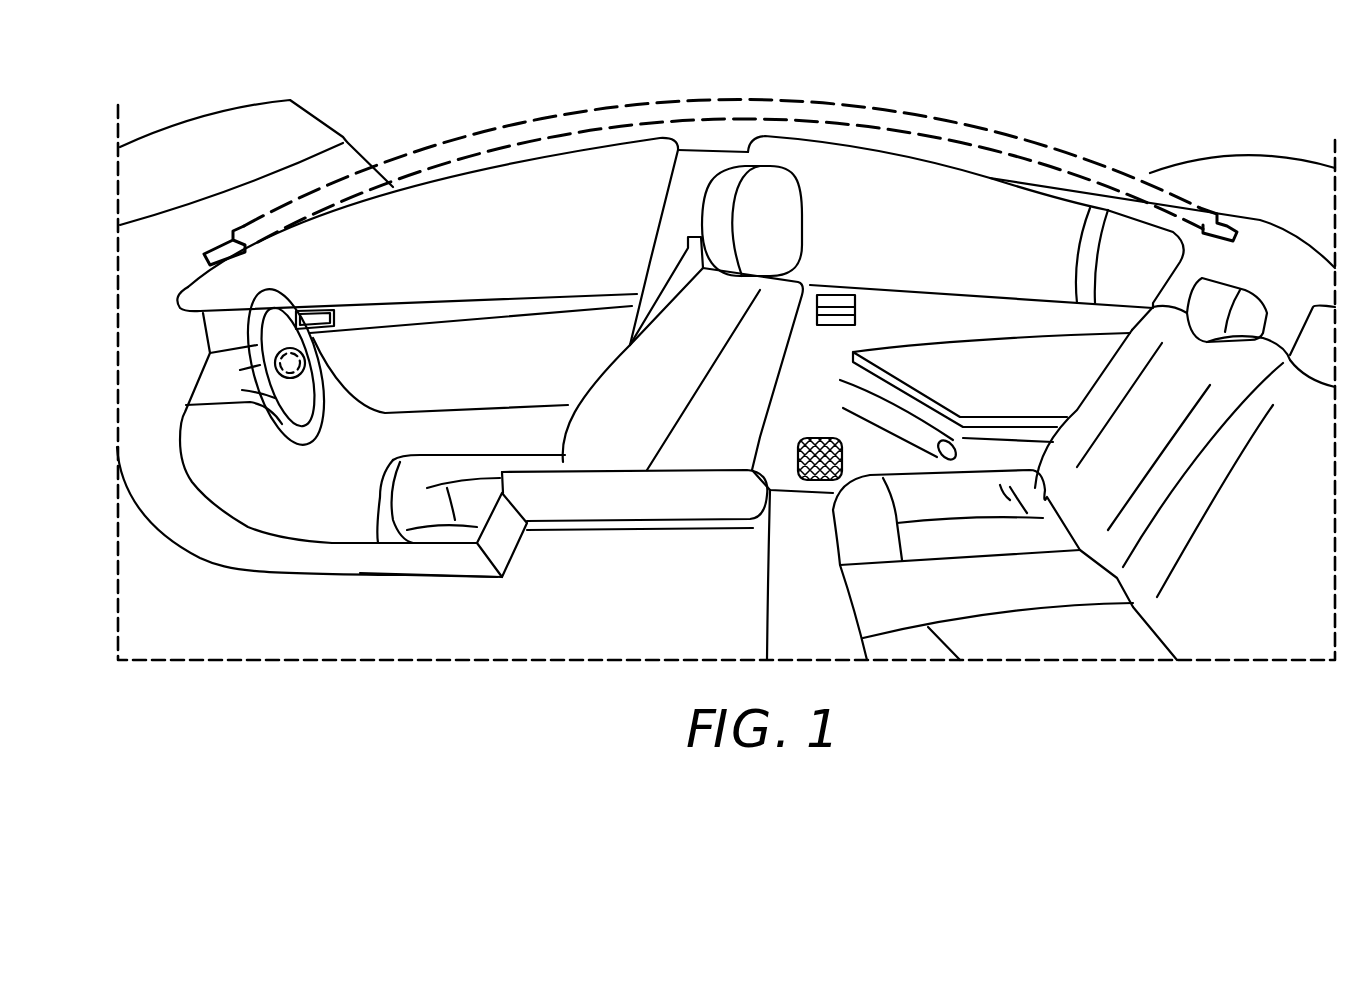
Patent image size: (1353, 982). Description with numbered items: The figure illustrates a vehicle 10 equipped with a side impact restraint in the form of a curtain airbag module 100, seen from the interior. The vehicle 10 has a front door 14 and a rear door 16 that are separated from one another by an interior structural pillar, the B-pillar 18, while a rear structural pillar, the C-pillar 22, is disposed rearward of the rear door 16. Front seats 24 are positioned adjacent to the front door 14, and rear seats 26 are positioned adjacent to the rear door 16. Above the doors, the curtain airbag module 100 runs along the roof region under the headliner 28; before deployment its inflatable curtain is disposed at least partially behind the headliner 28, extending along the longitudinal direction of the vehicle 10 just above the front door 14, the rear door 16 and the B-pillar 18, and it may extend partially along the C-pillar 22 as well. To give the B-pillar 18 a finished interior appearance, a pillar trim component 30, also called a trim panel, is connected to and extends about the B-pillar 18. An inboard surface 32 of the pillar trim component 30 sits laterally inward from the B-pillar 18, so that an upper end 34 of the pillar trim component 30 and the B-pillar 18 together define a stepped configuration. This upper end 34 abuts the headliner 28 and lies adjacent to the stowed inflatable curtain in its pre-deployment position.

The vehicle 10 is at (222, 84).
The front door 14 is at (445, 300).
The rear door 16 is at (1004, 298).
The B-pillar 18 is at (667, 197).
The C-pillar 22 is at (200, 187).
The front seats 24 is at (597, 383).
The rear seats 26 is at (1097, 377).
The headliner 28 is at (551, 150).
The pillar trim component 30 is at (653, 267).
The inboard surface 32 is at (673, 228).
The upper end 34 is at (711, 150).
The curtain airbag module 100 is at (1084, 140).